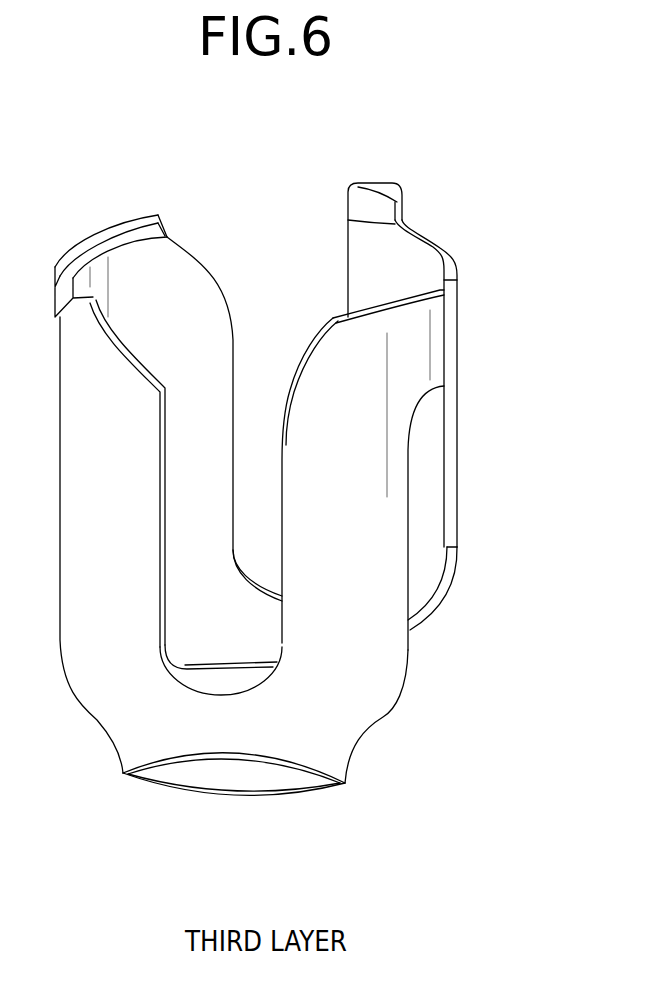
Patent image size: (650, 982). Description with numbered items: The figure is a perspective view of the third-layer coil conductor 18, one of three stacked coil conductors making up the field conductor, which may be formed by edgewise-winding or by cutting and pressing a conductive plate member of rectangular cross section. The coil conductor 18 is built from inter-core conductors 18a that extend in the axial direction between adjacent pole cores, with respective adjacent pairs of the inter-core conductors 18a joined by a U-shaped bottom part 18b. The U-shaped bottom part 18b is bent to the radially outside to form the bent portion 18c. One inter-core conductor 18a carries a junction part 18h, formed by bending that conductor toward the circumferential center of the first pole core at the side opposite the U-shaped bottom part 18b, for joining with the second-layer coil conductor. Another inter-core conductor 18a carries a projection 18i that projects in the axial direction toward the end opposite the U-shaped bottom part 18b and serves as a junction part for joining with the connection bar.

The coil conductor 18 is at (105, 162).
The inter-core conductor 18a is at (380, 518).
The U-shaped bottom part 18b is at (238, 727).
The bent portion 18c is at (208, 775).
The junction part 18h is at (413, 352).
The projection 18i is at (368, 203).